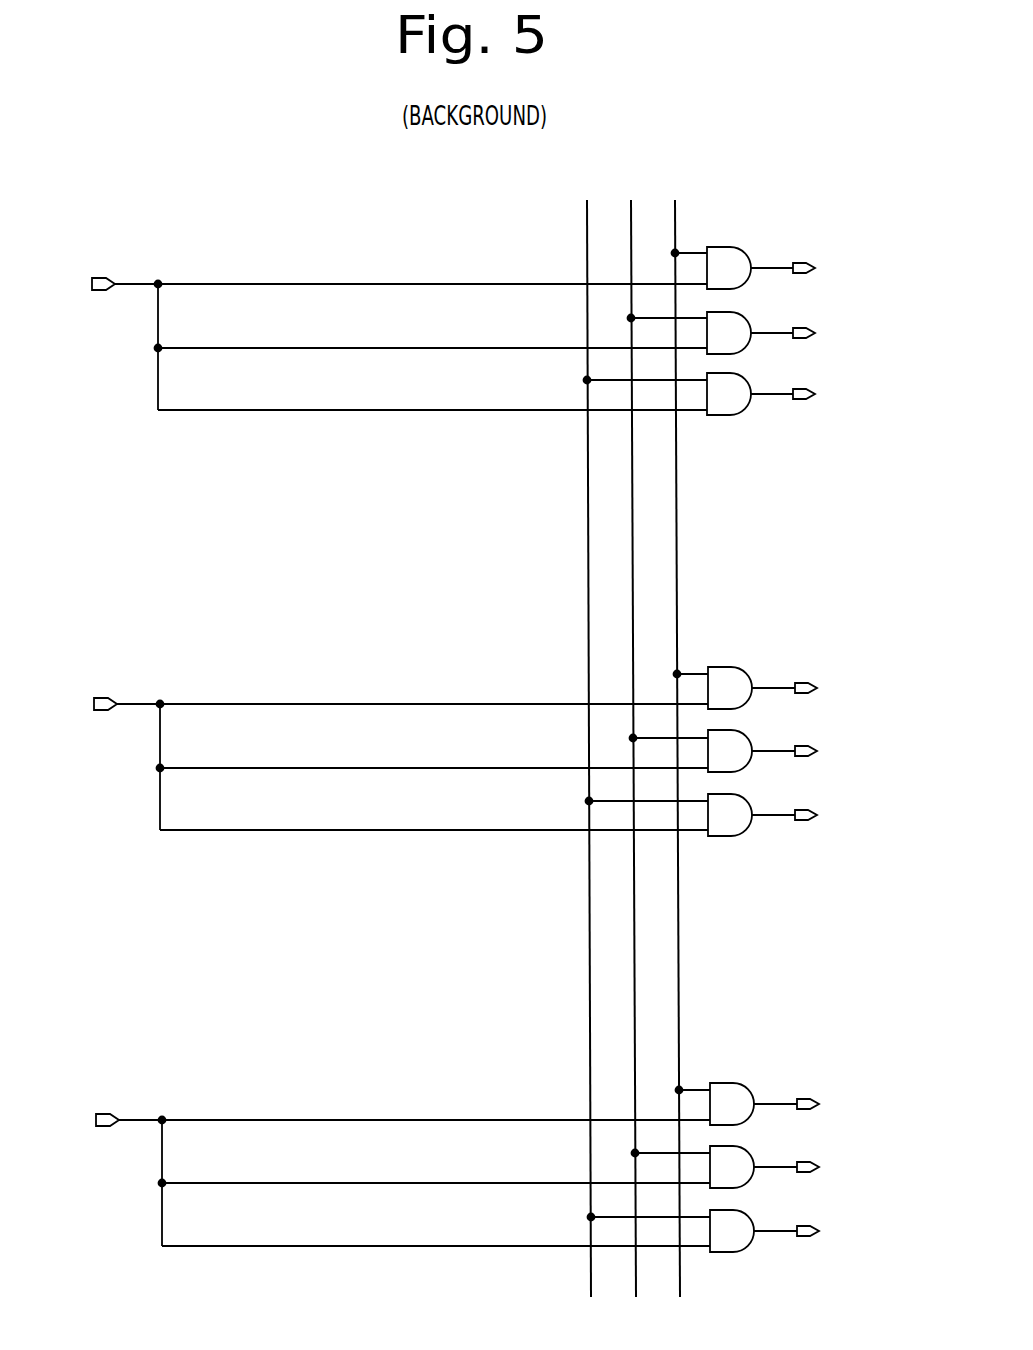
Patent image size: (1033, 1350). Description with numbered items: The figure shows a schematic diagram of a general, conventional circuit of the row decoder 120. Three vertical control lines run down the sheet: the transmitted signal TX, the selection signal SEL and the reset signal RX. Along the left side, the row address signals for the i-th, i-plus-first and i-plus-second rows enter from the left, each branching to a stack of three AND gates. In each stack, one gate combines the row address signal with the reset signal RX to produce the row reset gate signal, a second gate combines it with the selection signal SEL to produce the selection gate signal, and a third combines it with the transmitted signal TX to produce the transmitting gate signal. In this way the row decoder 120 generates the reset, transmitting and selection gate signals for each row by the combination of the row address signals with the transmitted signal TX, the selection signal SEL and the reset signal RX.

The row decoder 120 is at (146, 199).
The transmitted signal TX is at (588, 733).
The selection signal SEL is at (630, 733).
The reset signal RX is at (675, 733).